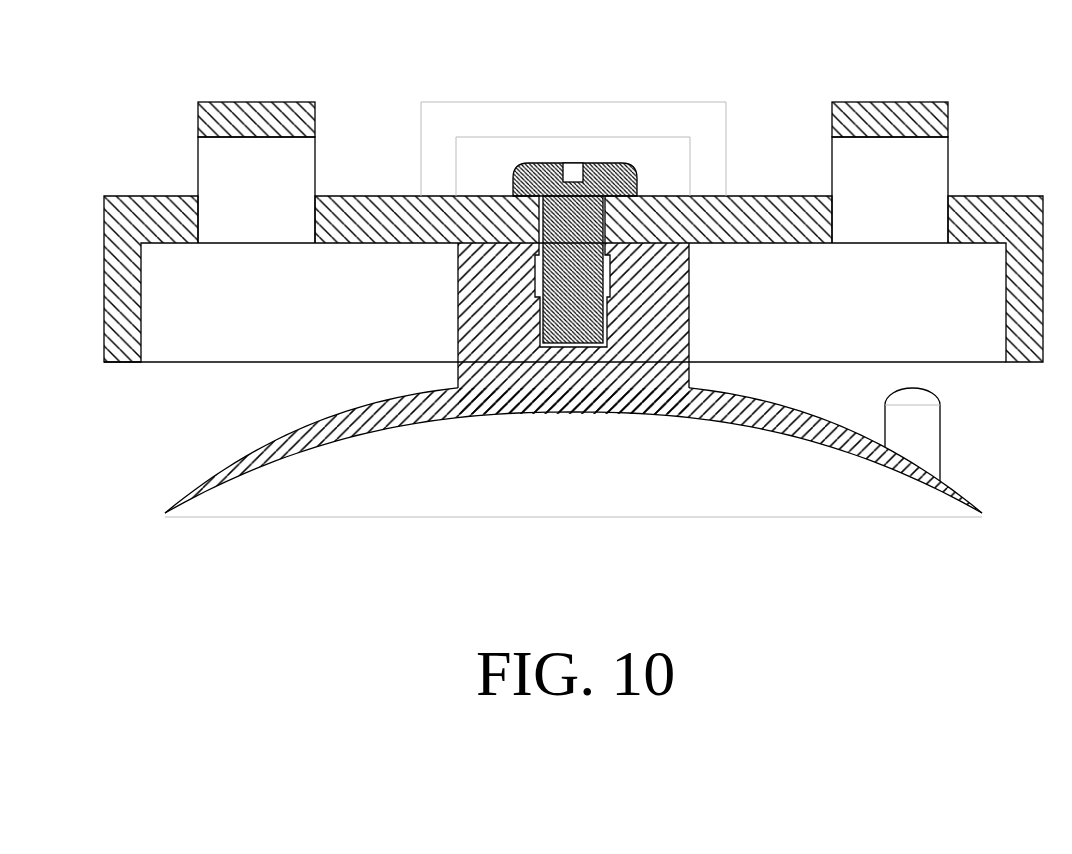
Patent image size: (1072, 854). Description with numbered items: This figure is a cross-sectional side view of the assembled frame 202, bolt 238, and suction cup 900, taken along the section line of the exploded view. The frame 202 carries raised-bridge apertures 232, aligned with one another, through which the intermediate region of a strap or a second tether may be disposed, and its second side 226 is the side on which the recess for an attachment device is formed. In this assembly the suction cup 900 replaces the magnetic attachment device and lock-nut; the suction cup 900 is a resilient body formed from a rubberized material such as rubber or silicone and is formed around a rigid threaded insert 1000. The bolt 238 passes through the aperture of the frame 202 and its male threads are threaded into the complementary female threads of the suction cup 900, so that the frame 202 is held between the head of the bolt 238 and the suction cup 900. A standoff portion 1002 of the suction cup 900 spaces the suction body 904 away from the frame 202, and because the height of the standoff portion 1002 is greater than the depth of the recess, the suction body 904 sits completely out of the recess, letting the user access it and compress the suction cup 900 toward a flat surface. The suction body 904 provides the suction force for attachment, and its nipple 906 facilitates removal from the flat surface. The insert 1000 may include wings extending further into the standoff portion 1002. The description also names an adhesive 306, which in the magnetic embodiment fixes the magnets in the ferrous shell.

The frame 202 is at (118, 312).
The second side of frame 226 is at (120, 363).
The apertures 232 is at (212, 181).
The bolt 238 is at (513, 178).
The adhesive 306 is at (974, 348).
The suction cup 900 is at (573, 414).
The suction body 904 is at (293, 446).
The nipple 906 is at (930, 462).
The rigid threaded insert 1000 is at (603, 278).
The standoff portion 1002 is at (483, 314).